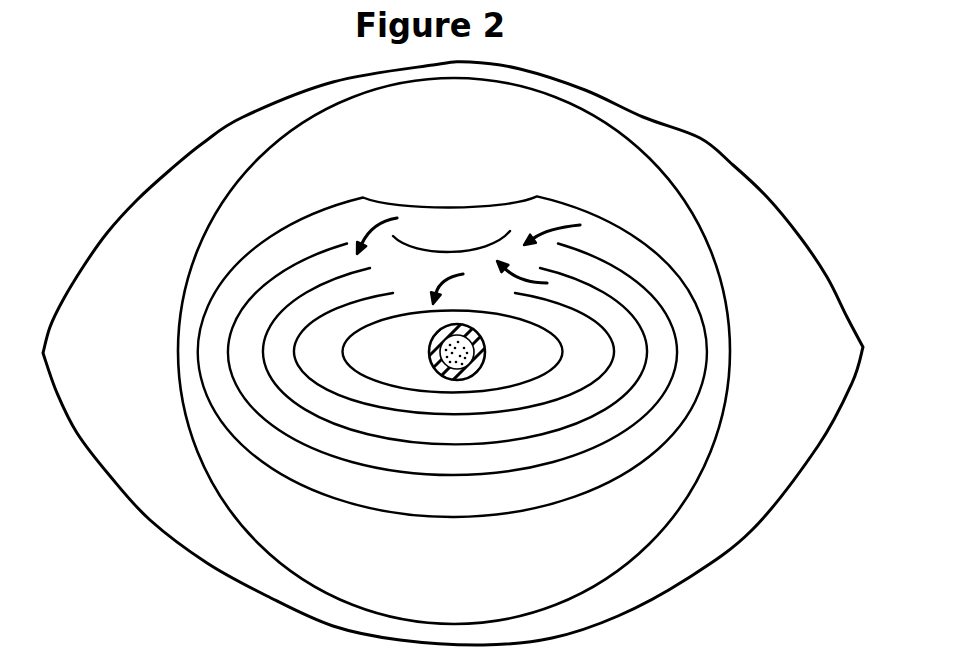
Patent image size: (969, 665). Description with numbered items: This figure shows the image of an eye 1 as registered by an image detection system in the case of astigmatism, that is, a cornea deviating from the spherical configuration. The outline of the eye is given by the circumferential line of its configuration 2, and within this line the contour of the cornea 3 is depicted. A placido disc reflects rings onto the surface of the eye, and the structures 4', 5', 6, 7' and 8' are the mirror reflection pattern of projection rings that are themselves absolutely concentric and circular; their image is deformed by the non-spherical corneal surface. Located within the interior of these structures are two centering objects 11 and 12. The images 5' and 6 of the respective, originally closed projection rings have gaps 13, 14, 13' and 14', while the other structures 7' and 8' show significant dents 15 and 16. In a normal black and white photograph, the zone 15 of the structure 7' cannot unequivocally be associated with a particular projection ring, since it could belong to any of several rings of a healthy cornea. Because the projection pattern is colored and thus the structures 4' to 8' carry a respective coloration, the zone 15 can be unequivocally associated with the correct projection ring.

The eye 1 is at (699, 120).
The configuration 2 is at (577, 82).
The cornea 3 is at (607, 128).
The structure 4' is at (473, 352).
The structure 5' is at (454, 368).
The structure 6 is at (525, 444).
The structure 7' is at (452, 362).
The structure 8' is at (452, 369).
The centering object 11 is at (429, 357).
The centering object 12 is at (485, 342).
The gap 13 is at (457, 281).
The gap 13' is at (388, 230).
The gap 14 is at (532, 280).
The gap 14' is at (565, 230).
The dent 15 is at (449, 254).
The dent 16 is at (448, 206).